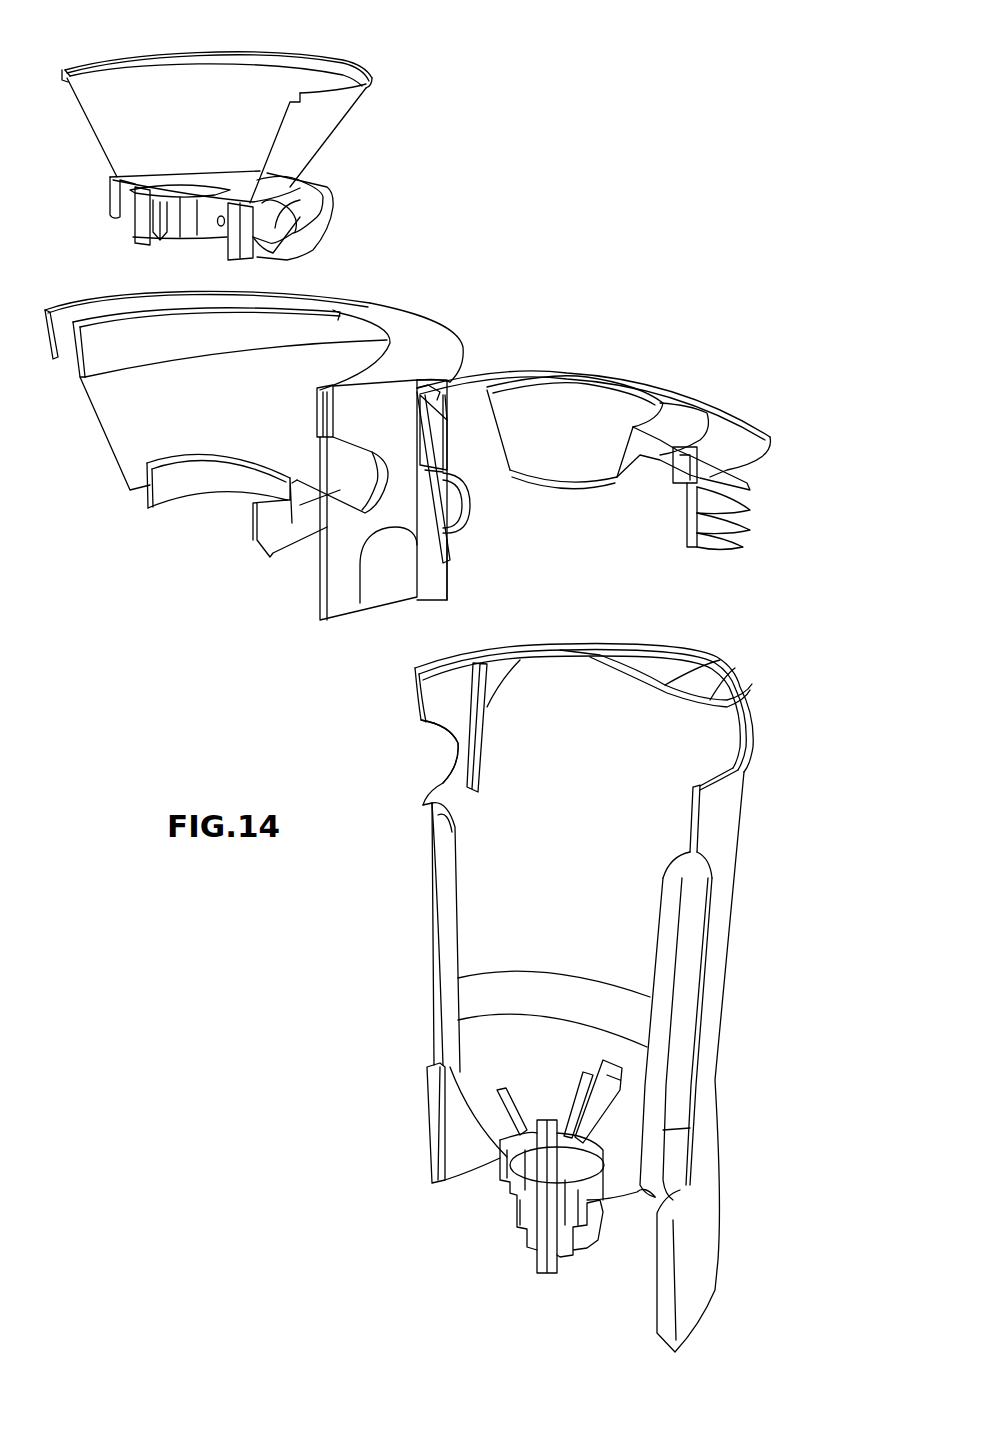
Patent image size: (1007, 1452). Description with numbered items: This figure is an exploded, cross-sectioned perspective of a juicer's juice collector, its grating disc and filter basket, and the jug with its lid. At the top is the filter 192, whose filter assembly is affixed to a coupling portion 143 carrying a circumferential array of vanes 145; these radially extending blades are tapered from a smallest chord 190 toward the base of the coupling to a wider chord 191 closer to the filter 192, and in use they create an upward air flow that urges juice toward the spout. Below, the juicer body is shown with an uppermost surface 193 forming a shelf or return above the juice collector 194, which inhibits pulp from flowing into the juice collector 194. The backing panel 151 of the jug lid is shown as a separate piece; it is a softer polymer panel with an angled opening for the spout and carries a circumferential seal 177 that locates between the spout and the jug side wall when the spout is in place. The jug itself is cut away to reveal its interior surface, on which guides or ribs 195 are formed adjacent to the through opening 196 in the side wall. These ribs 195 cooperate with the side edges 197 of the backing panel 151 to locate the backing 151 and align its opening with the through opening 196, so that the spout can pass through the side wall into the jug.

The smallest chord 190 is at (287, 160).
The filter 192 is at (303, 127).
The wider chord 191 is at (317, 177).
The vanes 145 is at (307, 222).
The coupling portion 143 is at (270, 243).
The uppermost surface 193 is at (432, 340).
The juice collector 194 is at (150, 403).
The circumferential seal 177 is at (373, 545).
The side edges 197 is at (493, 500).
The backing panel 151 is at (460, 443).
The guides or ribs 195 is at (487, 707).
The through opening 196 is at (457, 753).